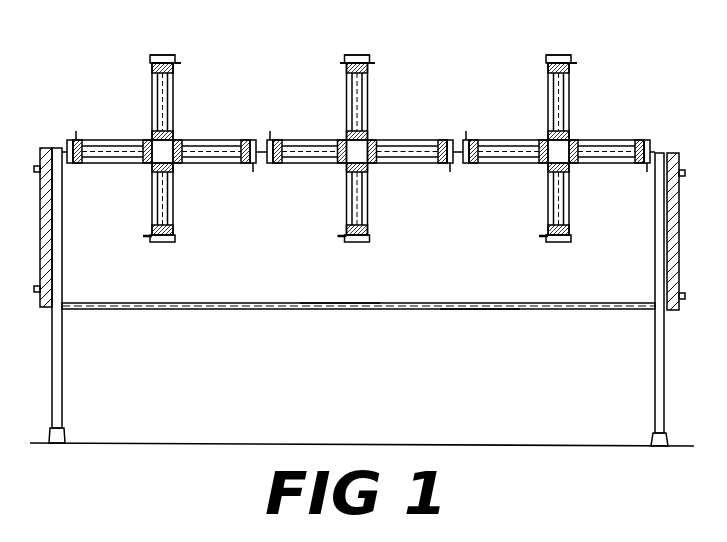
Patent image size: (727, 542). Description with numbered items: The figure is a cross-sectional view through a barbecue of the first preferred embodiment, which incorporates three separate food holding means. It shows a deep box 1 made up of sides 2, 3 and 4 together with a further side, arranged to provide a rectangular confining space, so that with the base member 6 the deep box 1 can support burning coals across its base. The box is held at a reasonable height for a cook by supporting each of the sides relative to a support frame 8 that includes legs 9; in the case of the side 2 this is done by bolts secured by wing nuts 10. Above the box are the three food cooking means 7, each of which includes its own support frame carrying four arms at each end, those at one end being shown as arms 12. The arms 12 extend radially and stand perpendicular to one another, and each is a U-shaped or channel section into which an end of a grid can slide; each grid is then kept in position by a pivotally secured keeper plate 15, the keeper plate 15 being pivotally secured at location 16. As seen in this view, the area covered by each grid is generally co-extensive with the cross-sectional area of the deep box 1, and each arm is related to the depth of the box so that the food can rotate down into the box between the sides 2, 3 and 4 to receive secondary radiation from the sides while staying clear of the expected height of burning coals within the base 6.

The deep box 1 is at (198, 309).
The side 2 is at (52, 233).
The side 3 is at (478, 287).
The side 4 is at (663, 279).
The base member 6 is at (340, 309).
The food cooking means 7 is at (178, 66).
The support frame 8 is at (63, 342).
The legs 9 is at (63, 394).
The wing nuts 10 is at (52, 169).
The arms 12 is at (178, 108).
The keeper plate 15 is at (177, 62).
The pivot location 16 is at (347, 62).